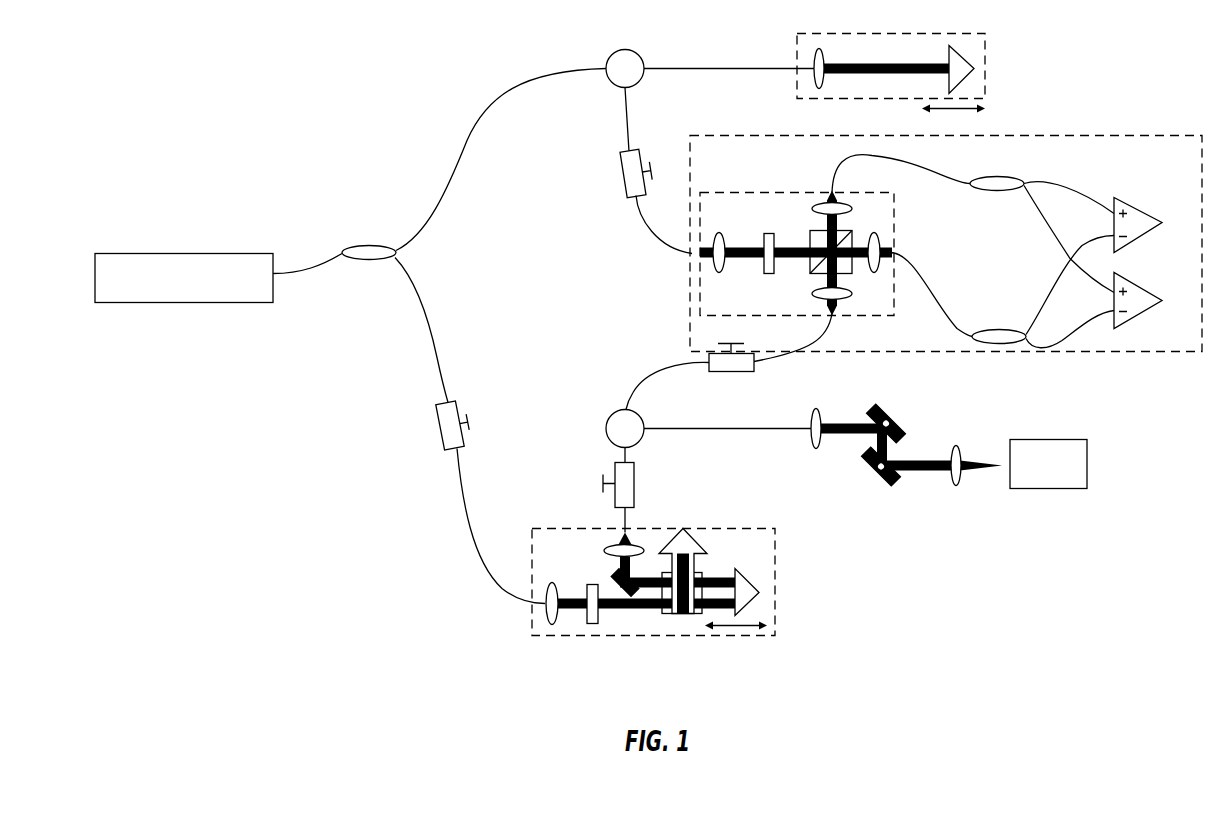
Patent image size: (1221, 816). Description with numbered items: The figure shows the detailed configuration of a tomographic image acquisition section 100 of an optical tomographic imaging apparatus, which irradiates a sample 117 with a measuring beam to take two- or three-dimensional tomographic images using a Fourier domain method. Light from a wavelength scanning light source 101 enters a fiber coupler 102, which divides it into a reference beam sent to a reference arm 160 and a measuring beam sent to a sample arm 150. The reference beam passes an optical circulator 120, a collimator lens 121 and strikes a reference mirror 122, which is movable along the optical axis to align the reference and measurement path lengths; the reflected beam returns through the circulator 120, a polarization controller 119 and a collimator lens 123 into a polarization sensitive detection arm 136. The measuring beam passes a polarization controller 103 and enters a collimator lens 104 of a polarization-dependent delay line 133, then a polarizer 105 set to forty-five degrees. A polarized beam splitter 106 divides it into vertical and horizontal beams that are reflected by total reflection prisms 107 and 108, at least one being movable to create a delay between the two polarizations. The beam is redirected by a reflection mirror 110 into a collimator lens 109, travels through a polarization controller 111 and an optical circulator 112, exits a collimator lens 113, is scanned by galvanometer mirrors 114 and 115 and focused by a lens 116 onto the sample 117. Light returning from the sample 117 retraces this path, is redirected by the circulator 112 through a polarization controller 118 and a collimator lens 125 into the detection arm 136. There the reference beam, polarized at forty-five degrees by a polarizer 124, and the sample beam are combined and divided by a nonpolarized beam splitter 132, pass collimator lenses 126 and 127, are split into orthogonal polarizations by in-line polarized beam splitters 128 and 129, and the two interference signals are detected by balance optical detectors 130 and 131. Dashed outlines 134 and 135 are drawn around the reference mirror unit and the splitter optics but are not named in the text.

The tomographic image acquisition section 100 is at (203, 161).
The wavelength scanning light source 101 is at (135, 253).
The fiber coupler 102 is at (365, 245).
The polarization controller 103 is at (447, 450).
The collimator lens 104 is at (548, 623).
The polarizer 105 is at (592, 623).
The polarized beam splitter 106 is at (680, 613).
The total reflection prism 107 is at (752, 585).
The total reflection prism 108 is at (685, 535).
The collimator lens 109 is at (610, 545).
The reflection mirror 110 is at (615, 575).
The polarization controller 111 is at (633, 485).
The optical circulator 112 is at (611, 414).
The collimator lens 113 is at (811, 448).
The galvanometer mirror 114 is at (895, 415).
The galvanometer mirror 115 is at (873, 480).
The lens 116 is at (950, 485).
The sample 117 is at (1055, 439).
The polarization controller 118 is at (730, 371).
The polarization controller 119 is at (618, 174).
The optical circulator 120 is at (622, 49).
The collimator lens 121 is at (815, 48).
The reference mirror 122 is at (948, 45).
The collimator lens 123 is at (717, 273).
The polarizer 124 is at (763, 233).
The collimator lens 125 is at (840, 299).
The collimator lens 126 is at (876, 233).
The collimator lens 127 is at (820, 202).
The in-line polarized beam splitter 128 is at (995, 176).
The in-line polarized beam splitter 129 is at (1005, 329).
The balance optical detector 130 is at (1122, 199).
The balance optical detector 131 is at (1130, 324).
The nonpolarized beam splitter 132 is at (820, 230).
The polarization-dependent delay line 133 is at (730, 635).
The delay line module 134 is at (985, 82).
The polarization detection optics 135 is at (700, 318).
The polarization sensitive detection arm 136 is at (1143, 135).
The sample arm 150 is at (437, 348).
The reference arm 160 is at (475, 121).